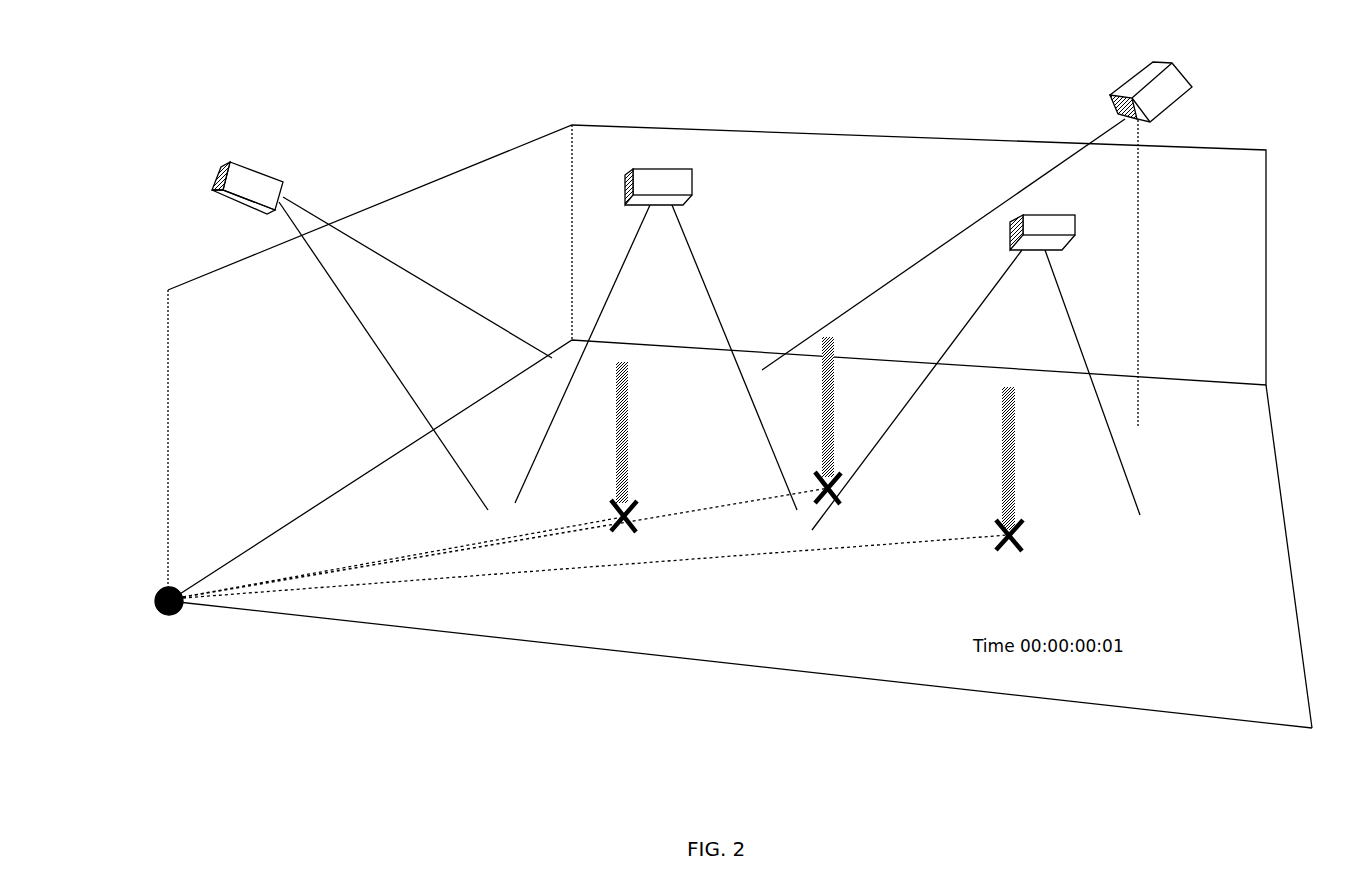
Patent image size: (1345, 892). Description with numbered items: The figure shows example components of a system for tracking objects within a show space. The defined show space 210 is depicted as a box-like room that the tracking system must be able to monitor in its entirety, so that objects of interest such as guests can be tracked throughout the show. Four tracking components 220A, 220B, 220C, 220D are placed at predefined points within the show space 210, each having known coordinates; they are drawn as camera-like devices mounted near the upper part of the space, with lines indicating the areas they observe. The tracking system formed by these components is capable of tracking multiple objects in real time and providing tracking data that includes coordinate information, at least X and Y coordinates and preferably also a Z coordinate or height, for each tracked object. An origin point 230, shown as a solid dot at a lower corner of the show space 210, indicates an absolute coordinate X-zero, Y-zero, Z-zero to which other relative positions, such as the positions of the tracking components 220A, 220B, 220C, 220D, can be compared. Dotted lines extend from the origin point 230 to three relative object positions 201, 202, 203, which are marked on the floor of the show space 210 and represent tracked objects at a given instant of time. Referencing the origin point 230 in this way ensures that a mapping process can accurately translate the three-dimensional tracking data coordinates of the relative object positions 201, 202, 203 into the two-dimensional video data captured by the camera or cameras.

The relative object position 201 is at (650, 447).
The relative object position 202 is at (848, 431).
The relative object position 203 is at (1030, 466).
The defined show space 210 is at (372, 161).
The tracking component 220A is at (234, 210).
The tracking component 220B is at (630, 145).
The tracking component 220C is at (1115, 75).
The tracking component 220D is at (1073, 250).
The origin point 230 is at (189, 566).